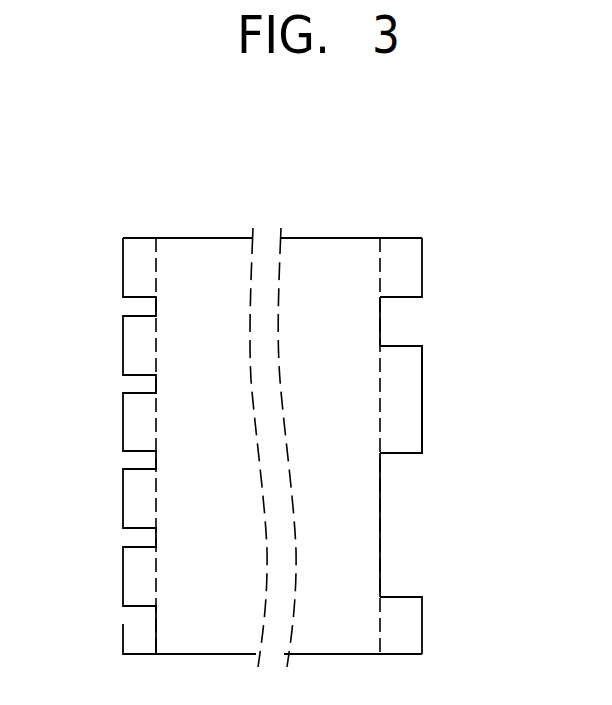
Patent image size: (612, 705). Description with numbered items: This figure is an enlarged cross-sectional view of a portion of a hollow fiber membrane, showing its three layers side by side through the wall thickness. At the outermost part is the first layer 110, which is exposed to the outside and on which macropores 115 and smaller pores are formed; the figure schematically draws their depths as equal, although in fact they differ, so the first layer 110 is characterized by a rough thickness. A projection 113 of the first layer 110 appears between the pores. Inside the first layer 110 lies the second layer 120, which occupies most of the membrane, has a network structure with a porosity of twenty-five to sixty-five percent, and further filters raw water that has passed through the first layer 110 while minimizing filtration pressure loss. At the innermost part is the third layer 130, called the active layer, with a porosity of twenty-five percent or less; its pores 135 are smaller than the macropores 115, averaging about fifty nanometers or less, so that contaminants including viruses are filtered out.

The second layer 120 is at (201, 248).
The first layer 110 is at (398, 248).
The pores 135 is at (131, 306).
The third layer 130 is at (132, 639).
The projection 113 is at (410, 398).
The macropores 115 is at (383, 525).